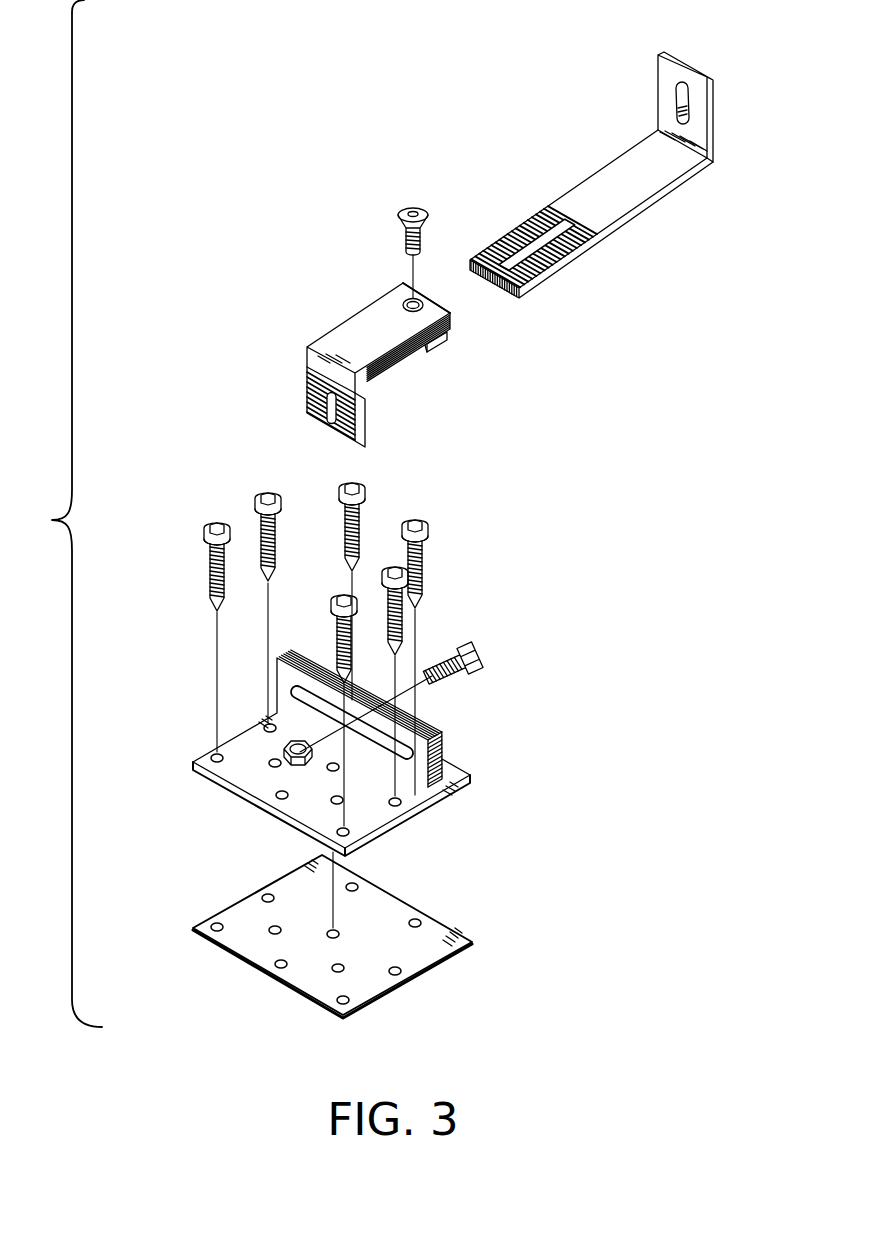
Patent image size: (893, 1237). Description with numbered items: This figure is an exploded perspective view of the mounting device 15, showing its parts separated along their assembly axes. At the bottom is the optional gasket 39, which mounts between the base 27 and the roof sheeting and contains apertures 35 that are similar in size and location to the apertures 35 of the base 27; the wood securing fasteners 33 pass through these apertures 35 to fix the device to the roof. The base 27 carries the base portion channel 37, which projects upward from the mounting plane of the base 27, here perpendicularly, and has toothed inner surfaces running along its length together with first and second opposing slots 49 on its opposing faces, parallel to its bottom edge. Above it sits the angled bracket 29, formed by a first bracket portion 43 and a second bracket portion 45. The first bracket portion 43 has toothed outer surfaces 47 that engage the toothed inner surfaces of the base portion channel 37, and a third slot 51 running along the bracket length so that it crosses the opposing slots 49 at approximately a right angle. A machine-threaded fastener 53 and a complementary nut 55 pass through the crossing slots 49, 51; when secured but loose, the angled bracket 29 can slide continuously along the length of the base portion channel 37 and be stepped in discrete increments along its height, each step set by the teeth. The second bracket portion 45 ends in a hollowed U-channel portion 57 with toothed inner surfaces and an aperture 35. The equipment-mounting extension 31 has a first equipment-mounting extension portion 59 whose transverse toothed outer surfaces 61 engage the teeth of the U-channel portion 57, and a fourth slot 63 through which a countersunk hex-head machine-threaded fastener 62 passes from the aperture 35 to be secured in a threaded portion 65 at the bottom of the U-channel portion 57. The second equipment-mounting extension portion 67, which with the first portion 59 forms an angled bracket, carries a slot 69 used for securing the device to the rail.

The mounting device 15 is at (58, 513).
The base 27 is at (325, 753).
The angled bracket 29 is at (374, 320).
The equipment-mounting extension 31 is at (610, 171).
The wood securing fasteners 33 is at (213, 520).
The apertures 35 is at (413, 298).
The base portion channel 37 is at (437, 733).
The gasket 39 is at (455, 930).
The first bracket portion 43 is at (305, 360).
The second bracket portion 45 is at (328, 333).
The toothed outer surfaces 47 is at (308, 385).
The first and second opposing slots 49 is at (375, 748).
The third slot 51 is at (322, 425).
The machine-threaded fastener 53 is at (477, 650).
The nut 55 is at (283, 748).
The U-channel portion 57 is at (452, 333).
The first equipment-mounting extension portion 59 is at (590, 175).
The toothed outer surfaces 61 is at (527, 220).
The machine-threaded fastener 62 is at (412, 206).
The fourth slot 63 is at (547, 205).
The threaded portion 65 is at (433, 350).
The second equipment-mounting extension portion 67 is at (693, 66).
The slot 69 is at (675, 100).